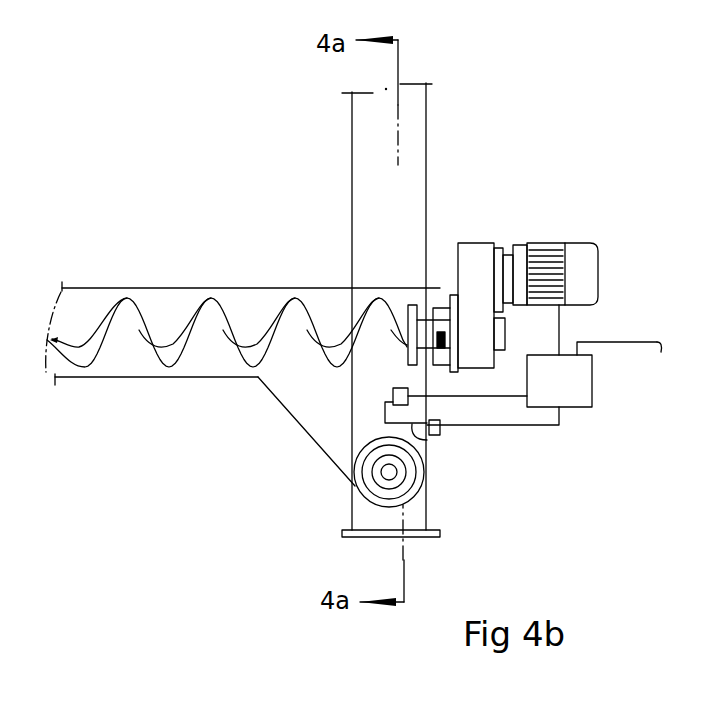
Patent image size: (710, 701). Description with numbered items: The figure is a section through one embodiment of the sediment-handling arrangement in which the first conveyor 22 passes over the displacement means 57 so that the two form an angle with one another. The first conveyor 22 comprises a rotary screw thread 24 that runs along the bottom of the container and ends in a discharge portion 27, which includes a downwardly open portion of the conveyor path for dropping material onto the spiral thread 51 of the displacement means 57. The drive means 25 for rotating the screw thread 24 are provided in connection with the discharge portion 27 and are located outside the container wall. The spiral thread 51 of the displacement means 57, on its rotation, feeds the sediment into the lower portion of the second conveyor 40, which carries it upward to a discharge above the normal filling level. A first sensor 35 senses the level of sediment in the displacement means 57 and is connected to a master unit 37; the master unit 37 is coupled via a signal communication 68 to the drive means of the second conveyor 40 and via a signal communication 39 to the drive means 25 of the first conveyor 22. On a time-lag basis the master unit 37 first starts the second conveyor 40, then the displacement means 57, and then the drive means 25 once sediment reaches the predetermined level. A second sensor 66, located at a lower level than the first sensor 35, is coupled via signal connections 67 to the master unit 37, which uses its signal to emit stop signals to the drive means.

The first conveyor 22 is at (138, 288).
The screw thread 24 is at (148, 379).
The discharge portion 27 is at (322, 310).
The second conveyor 40 is at (415, 141).
The drive means 25 is at (553, 243).
The signal communication 39 is at (560, 335).
The signal communication 68 is at (657, 342).
The master unit 37 is at (592, 388).
The signal connections 67 is at (542, 427).
The second sensor 66 is at (440, 430).
The first sensor 35 is at (387, 393).
The spiral thread 51 is at (375, 483).
The displacement means 57 is at (430, 477).